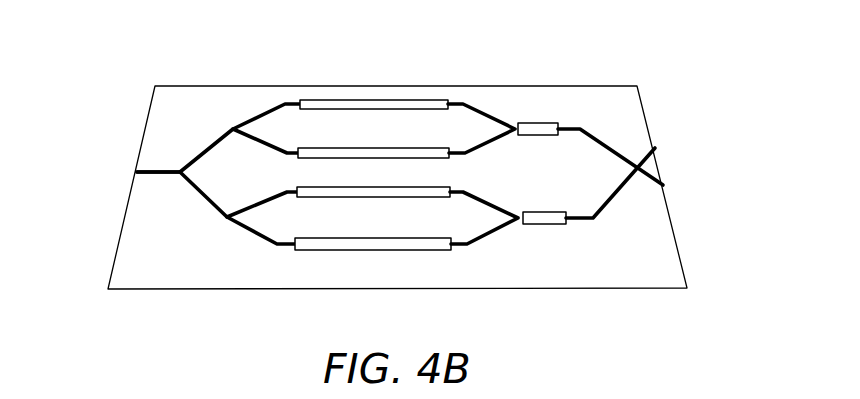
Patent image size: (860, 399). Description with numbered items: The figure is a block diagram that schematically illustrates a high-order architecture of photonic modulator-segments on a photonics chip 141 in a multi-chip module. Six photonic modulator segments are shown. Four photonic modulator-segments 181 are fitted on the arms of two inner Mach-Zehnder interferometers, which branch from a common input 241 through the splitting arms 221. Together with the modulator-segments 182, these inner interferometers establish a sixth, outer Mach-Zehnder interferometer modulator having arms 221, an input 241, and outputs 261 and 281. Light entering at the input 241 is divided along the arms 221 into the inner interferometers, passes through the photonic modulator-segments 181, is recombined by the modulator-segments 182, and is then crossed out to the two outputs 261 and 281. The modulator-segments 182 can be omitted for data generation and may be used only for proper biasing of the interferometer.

The substrate / optical chip 141 is at (600, 86).
The arms 221 is at (208, 138).
The photonic modulator-segments 181 is at (313, 148).
The modulator-segments 182 is at (541, 123).
The input 241 is at (108, 185).
The output 261 is at (677, 131).
The output 281 is at (684, 194).